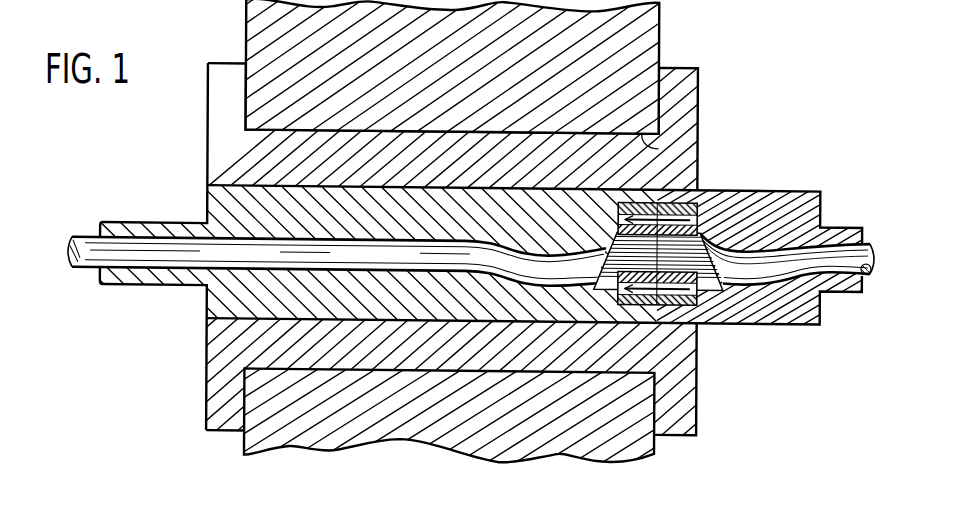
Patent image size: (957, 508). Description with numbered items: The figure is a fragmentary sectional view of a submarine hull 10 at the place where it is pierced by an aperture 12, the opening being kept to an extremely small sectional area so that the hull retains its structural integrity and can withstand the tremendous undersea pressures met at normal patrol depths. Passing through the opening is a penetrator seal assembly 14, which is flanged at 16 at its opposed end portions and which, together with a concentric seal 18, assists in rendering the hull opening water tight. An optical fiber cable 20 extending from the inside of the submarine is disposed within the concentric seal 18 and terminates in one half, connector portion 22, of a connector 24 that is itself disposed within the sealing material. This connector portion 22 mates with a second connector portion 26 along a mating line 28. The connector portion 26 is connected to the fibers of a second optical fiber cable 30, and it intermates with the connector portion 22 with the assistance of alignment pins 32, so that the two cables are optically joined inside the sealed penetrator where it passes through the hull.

The submarine hull 10 is at (658, 31).
The aperture 12 is at (697, 141).
The penetrator seal assembly 14 is at (699, 372).
The flange 16 is at (207, 397).
The concentric seal 18 is at (172, 289).
The optical fiber cable 20 is at (96, 240).
The connector portion 22 is at (648, 200).
The connector 24 is at (697, 209).
The connector portion 26 is at (698, 304).
The mating line 28 is at (658, 311).
The optical fiber cable 30 is at (840, 245).
The alignment pins 32 is at (748, 190).